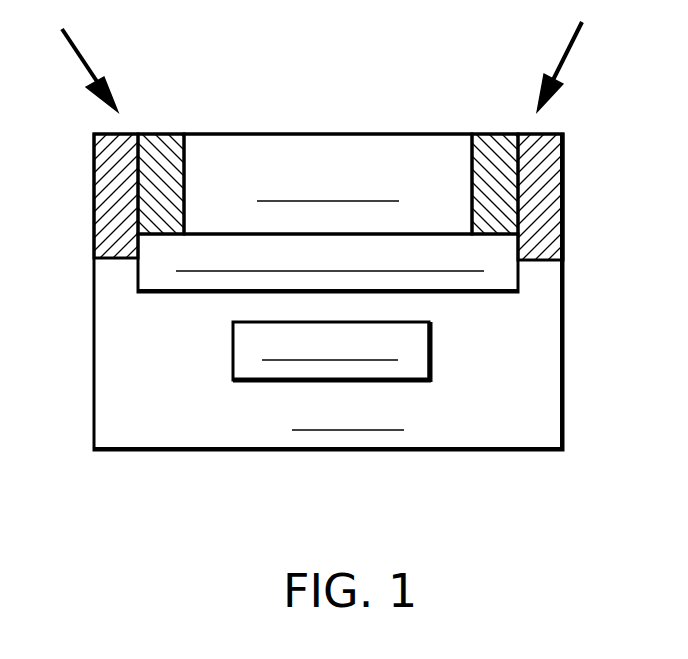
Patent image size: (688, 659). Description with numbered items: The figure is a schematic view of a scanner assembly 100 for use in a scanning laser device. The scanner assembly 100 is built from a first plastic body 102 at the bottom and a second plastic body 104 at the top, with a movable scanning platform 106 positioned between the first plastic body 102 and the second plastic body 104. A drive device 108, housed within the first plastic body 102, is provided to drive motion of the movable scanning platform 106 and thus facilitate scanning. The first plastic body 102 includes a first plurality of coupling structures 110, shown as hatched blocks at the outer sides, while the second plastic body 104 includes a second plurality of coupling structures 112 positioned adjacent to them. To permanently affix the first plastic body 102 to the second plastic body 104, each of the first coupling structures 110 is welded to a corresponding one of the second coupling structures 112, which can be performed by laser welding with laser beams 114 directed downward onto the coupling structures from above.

The scanner assembly 100 is at (360, 499).
The first plastic body 102 is at (500, 452).
The second plastic body 104 is at (384, 133).
The movable scanning platform 106 is at (433, 294).
The drive device 108 is at (232, 345).
The first plurality of coupling structures 110 is at (93, 200).
The second plurality of coupling structures 112 is at (165, 133).
The laser beams 114 is at (72, 40).